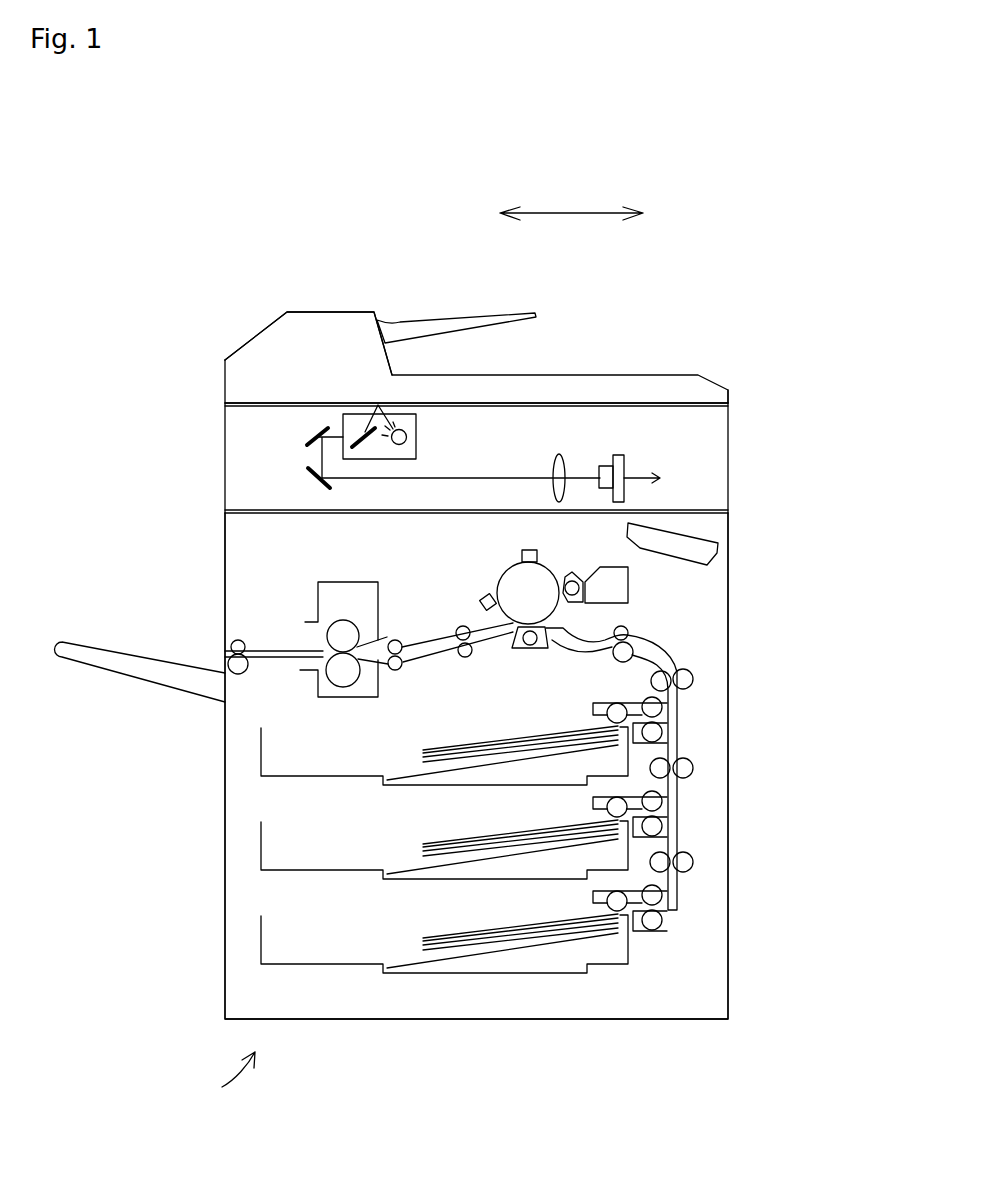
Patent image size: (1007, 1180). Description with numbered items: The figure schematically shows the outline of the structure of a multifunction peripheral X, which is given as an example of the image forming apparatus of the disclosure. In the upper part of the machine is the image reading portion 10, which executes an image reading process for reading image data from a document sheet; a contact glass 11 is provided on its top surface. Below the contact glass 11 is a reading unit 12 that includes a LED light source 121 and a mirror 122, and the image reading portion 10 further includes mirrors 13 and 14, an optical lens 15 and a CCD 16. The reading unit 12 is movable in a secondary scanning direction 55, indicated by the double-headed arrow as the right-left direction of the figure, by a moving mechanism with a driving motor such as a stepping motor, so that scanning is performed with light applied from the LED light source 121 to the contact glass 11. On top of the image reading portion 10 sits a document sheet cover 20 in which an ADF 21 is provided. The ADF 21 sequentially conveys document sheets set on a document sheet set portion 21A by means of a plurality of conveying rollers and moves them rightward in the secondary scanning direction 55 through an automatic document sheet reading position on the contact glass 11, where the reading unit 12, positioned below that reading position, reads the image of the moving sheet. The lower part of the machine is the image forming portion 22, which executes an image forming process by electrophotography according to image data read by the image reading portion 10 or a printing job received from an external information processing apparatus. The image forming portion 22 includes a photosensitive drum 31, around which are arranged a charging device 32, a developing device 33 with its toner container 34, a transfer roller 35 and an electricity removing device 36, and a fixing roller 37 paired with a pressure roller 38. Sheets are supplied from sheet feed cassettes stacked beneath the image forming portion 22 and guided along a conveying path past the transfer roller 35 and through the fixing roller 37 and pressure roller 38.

The image reading portion 10 is at (728, 447).
The contact glass 11 is at (661, 403).
The reading unit 12 is at (396, 421).
The LED light source 121 is at (407, 441).
The mirror 122 is at (367, 433).
The mirror 13 is at (307, 437).
The mirror 14 is at (305, 473).
The optical lens 15 is at (553, 457).
The CCD 16 is at (617, 456).
The document sheet cover 20 is at (708, 380).
The ADF 21 is at (308, 311).
The document sheet set portion 21A is at (452, 312).
The image forming portion 22 is at (728, 588).
The photosensitive drum 31 is at (507, 570).
The charging device 32 is at (538, 553).
The developing device 33 is at (577, 577).
The toner container 34 is at (628, 590).
The transfer roller 35 is at (525, 652).
The electricity removing device 36 is at (484, 598).
The fixing roller 37 is at (330, 622).
The pressure roller 38 is at (337, 686).
The secondary scanning direction 55 is at (577, 213).
The multifunction peripheral X is at (227, 1080).